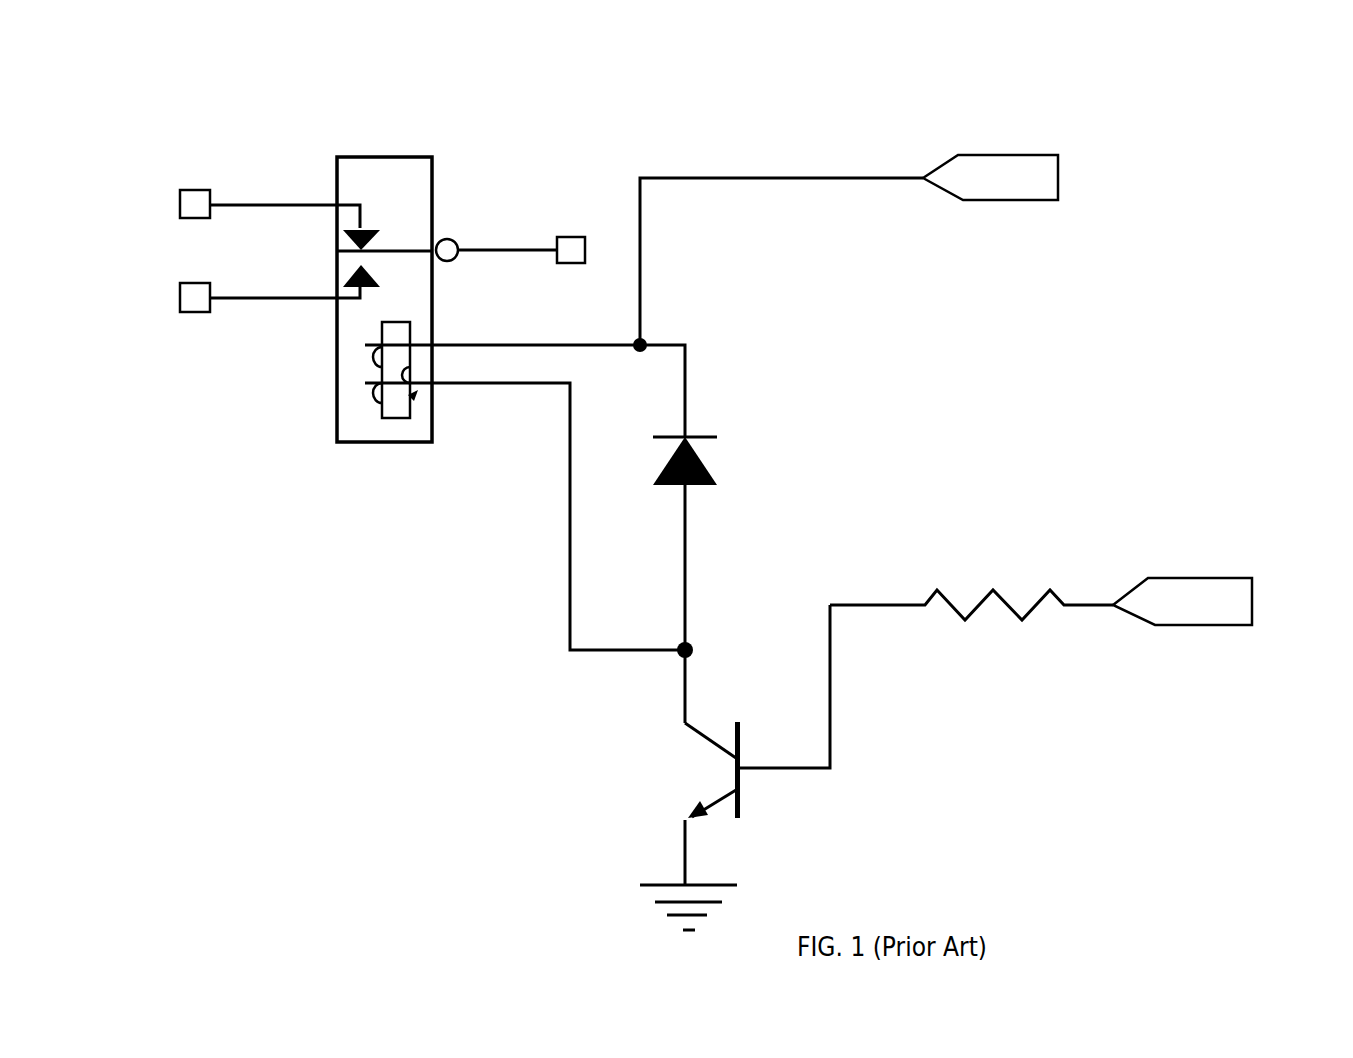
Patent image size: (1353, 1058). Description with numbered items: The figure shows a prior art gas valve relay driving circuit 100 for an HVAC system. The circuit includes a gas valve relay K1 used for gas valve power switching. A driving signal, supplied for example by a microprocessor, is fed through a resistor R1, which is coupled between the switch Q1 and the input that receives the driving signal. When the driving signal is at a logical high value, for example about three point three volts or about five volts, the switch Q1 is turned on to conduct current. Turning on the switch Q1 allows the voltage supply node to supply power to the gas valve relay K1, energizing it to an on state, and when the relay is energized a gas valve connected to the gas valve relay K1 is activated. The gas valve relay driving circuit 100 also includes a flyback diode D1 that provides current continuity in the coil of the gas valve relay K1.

The gas valve relay driving circuit 100 is at (222, 77).
The gas valve relay K1 is at (427, 139).
The flyback diode D1 is at (782, 449).
The switch Q1 is at (688, 791).
The resistor R1 is at (982, 560).